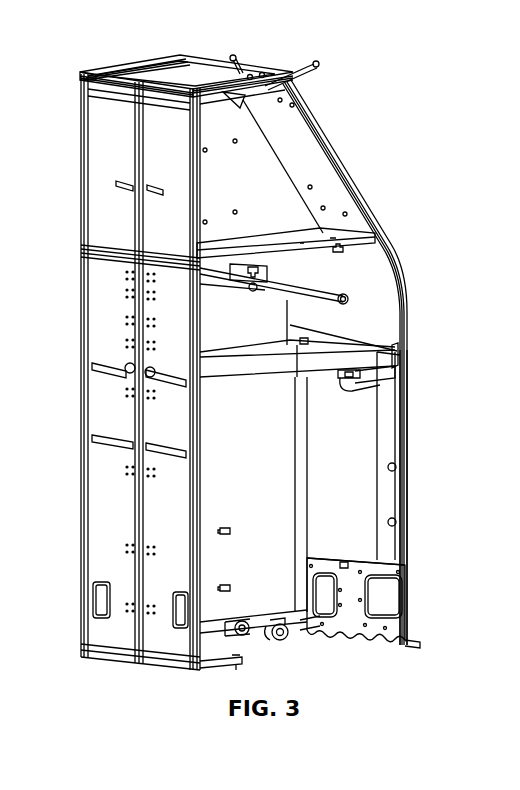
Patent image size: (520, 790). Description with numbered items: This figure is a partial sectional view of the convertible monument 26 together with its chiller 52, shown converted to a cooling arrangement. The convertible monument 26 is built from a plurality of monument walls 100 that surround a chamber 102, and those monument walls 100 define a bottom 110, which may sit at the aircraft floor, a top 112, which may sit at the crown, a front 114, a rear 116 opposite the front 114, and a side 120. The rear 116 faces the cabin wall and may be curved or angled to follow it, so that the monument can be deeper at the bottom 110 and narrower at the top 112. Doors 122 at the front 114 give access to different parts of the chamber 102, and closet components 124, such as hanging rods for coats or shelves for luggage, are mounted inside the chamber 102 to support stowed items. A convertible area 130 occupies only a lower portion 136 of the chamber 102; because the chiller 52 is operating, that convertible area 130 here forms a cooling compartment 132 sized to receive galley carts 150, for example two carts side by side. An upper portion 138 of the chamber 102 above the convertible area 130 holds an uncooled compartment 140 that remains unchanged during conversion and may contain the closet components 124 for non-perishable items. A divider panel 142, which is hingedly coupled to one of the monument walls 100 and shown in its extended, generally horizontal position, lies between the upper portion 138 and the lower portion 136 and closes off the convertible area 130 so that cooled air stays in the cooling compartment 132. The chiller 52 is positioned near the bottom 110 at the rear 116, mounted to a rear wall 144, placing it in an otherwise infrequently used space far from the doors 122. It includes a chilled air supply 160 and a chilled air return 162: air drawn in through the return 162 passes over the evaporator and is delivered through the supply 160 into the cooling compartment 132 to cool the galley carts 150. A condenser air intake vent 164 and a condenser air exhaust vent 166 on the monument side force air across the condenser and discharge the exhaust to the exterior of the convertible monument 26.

The convertible monument 26 is at (374, 93).
The chiller 52 is at (389, 428).
The monument walls 100 is at (232, 77).
The chamber 102 is at (326, 200).
The bottom 110 is at (156, 668).
The top 112 is at (160, 62).
The front 114 is at (81, 320).
The rear 116 is at (383, 262).
The side 120 is at (110, 70).
The doors 122 is at (105, 406).
The closet components 124 is at (324, 231).
The convertible area 130 is at (412, 358).
The cooling compartment 132 is at (354, 410).
The lower portion 136 is at (426, 567).
The upper portion 138 is at (353, 135).
The uncooled compartment 140 is at (299, 124).
The divider panel 142 is at (323, 358).
The rear wall 144 is at (409, 352).
The galley carts 150 is at (279, 646).
The chilled air supply 160 is at (380, 378).
The chilled air return 162 is at (345, 568).
The condenser air intake vent 164 is at (397, 465).
The condenser air exhaust vent 166 is at (397, 521).